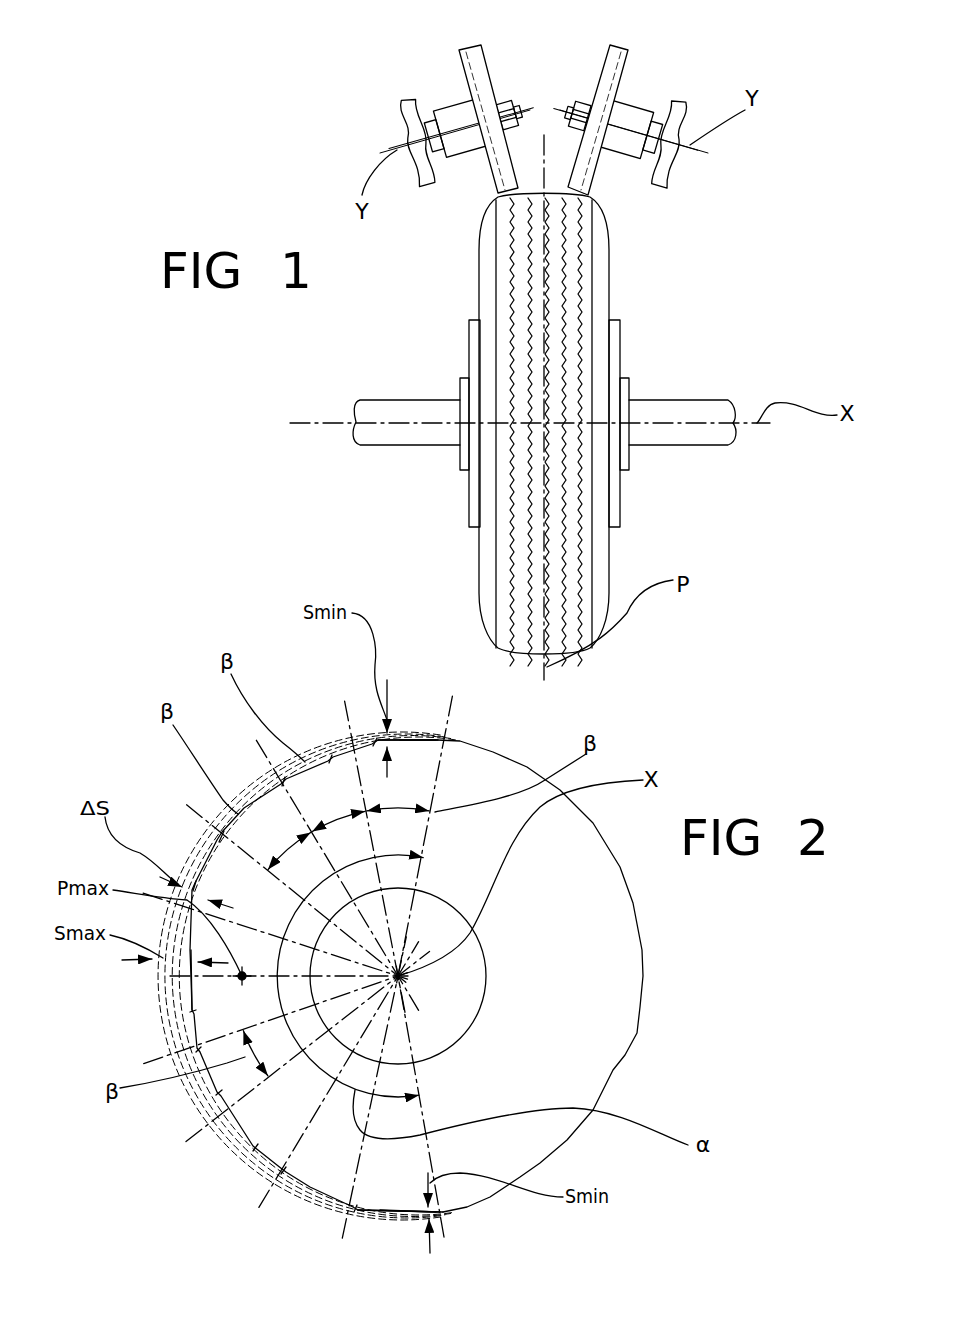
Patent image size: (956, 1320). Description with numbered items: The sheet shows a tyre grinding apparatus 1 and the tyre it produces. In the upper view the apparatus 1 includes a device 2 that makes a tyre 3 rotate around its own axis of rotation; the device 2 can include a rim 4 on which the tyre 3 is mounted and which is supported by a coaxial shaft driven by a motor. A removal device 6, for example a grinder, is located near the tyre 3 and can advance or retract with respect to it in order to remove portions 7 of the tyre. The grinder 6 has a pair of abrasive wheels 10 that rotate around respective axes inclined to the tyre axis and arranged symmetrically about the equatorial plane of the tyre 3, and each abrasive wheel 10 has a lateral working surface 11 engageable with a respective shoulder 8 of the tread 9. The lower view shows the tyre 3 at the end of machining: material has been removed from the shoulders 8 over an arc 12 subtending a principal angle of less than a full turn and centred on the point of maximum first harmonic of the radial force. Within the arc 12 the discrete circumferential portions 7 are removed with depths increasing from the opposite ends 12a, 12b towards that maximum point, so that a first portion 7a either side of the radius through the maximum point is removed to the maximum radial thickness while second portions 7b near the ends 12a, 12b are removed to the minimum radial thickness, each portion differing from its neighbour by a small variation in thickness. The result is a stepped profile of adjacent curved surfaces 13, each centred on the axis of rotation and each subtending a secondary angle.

In FIG. 1, the apparatus 1 is at (749, 350).
In FIG. 1, the device 2 is at (705, 452).
In FIG. 1, the tyre 3 is at (620, 260).
In FIG. 2, the tyre 3 is at (637, 1073).
In FIG. 2, the rim 4 is at (455, 1024).
In FIG. 1, the removal device 6 is at (578, 80).
In FIG. 2, the discrete circumferential portions 7 is at (367, 743).
In FIG. 2, the first discrete circumferential portion 7a is at (177, 993).
In FIG. 2, the second discrete circumferential portions 7b is at (427, 740).
In FIG. 1, the shoulders 8 is at (508, 222).
In FIG. 1, the tread 9 is at (553, 413).
In FIG. 1, the abrasive wheels 10 is at (453, 60).
In FIG. 1, the lateral working surface 11 is at (477, 70).
In FIG. 2, the arc 12 is at (170, 1035).
In FIG. 2, the end of arc 12a is at (443, 1213).
In FIG. 2, the end of arc 12b is at (437, 740).
In FIG. 2, the curved surfaces 13 is at (325, 757).